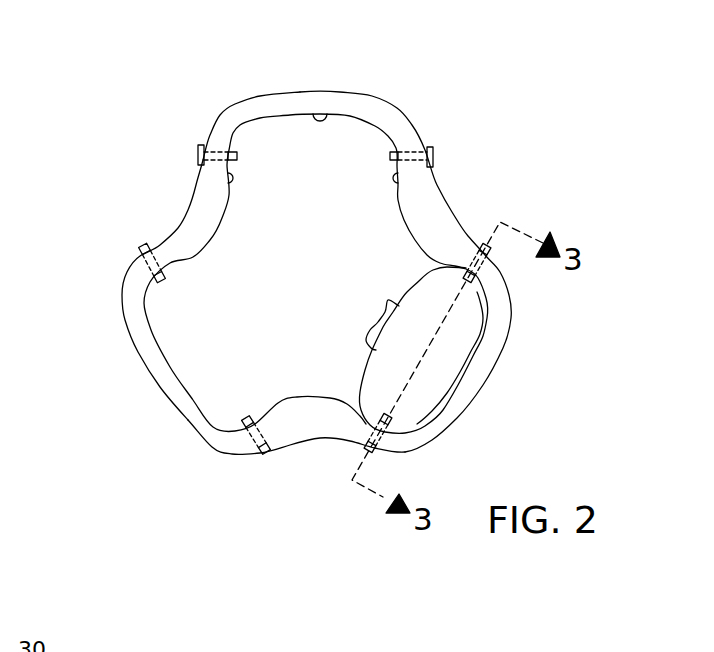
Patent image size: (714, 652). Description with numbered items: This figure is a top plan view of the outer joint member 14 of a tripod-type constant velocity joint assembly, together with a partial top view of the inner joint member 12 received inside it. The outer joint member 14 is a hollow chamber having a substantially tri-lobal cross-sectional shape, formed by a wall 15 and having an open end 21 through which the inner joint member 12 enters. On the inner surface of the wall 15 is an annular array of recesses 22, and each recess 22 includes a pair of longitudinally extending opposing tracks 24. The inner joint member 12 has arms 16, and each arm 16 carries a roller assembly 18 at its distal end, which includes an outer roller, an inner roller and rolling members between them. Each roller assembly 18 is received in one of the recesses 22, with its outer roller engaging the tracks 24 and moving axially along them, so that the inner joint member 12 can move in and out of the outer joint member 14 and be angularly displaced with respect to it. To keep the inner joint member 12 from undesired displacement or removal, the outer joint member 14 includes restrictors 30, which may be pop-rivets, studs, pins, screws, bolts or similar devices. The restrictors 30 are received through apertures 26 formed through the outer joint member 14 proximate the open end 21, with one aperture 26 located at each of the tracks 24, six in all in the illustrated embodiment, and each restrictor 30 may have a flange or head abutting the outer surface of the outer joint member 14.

The inner joint member 12 is at (444, 376).
The outer joint member 14 is at (217, 108).
The wall 15 is at (184, 425).
The arm 16 is at (375, 330).
The roller assembly 18 is at (467, 306).
The open end 21 is at (130, 288).
The recess 22 is at (315, 112).
The track 24 is at (232, 179).
The aperture 26 is at (217, 150).
The restrictor 30 is at (140, 254).